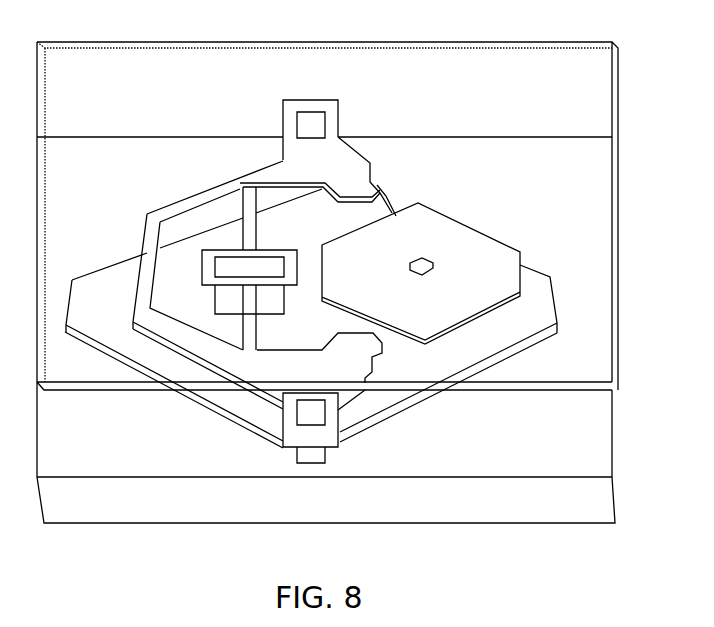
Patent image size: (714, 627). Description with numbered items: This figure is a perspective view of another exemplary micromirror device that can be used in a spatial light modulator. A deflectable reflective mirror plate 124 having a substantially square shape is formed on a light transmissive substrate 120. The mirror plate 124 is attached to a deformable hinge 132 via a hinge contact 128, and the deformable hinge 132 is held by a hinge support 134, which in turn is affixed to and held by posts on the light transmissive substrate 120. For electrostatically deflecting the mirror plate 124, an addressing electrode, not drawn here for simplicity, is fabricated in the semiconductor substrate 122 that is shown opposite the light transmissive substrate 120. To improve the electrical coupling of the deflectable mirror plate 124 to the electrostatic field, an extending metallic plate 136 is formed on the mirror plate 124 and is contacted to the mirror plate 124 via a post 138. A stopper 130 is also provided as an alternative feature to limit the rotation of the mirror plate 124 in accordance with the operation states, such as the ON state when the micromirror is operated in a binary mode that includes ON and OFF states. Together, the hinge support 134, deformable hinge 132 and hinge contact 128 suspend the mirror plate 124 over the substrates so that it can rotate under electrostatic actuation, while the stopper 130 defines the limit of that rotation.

The light transmissive substrate 120 is at (462, 523).
The semiconductor substrate 122 is at (262, 41).
The deflectable reflective mirror plate 124 is at (394, 400).
The hinge contact 128 is at (215, 300).
The stopper 130 is at (380, 198).
The deformable hinge 132 is at (243, 230).
The hinge support 134 is at (141, 289).
The extending metallic plate 136 is at (457, 237).
The post 138 is at (420, 262).